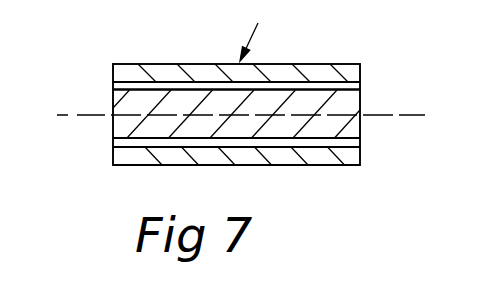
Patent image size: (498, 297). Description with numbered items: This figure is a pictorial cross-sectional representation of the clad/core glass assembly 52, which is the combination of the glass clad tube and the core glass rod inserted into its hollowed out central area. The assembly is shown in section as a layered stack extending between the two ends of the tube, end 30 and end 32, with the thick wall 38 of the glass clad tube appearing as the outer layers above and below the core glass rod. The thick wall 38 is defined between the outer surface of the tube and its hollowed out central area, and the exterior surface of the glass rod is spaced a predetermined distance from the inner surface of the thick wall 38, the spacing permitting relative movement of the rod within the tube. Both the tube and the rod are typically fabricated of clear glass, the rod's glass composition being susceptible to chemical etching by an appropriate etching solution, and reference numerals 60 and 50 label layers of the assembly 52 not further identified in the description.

The end 30 is at (358, 66).
The thick wall 38 is at (362, 74).
The intermediate bonding layer 60 is at (350, 86).
The core layer 50 is at (362, 127).
The end 32 is at (120, 157).
The clad/core glass assembly 52 is at (257, 30).